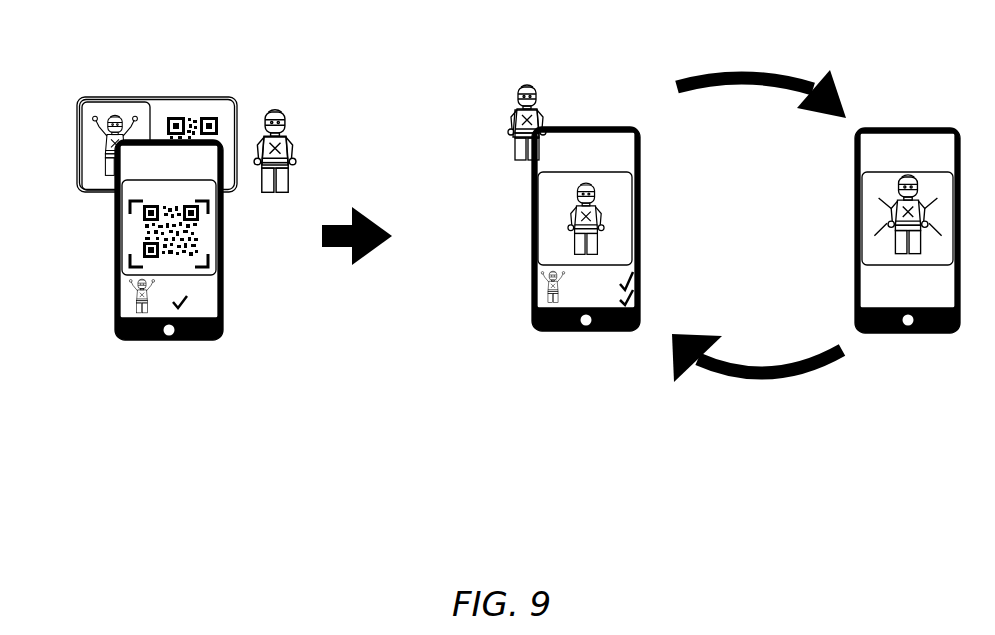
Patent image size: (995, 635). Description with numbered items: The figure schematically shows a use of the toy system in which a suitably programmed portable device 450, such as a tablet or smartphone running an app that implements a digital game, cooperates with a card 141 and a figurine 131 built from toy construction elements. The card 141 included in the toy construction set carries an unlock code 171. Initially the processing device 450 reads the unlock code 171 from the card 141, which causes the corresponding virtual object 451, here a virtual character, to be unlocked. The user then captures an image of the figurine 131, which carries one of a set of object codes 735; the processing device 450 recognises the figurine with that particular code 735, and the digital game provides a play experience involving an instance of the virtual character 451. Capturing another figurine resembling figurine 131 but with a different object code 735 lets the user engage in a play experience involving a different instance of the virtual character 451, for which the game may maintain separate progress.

The card 141 is at (98, 97).
The unlock code 171 is at (205, 112).
The figurine 131 is at (458, 122).
The object code 735 is at (288, 147).
The portable device 450 is at (222, 300).
The virtual object 451 is at (122, 302).